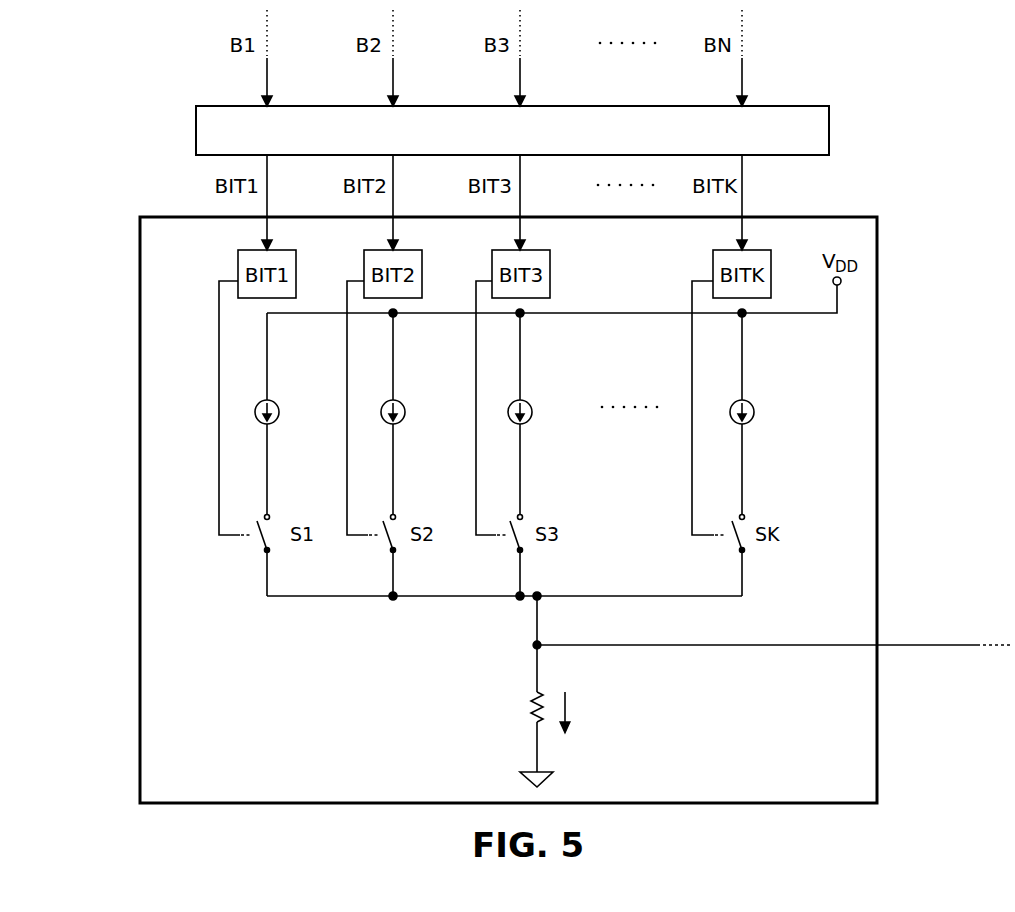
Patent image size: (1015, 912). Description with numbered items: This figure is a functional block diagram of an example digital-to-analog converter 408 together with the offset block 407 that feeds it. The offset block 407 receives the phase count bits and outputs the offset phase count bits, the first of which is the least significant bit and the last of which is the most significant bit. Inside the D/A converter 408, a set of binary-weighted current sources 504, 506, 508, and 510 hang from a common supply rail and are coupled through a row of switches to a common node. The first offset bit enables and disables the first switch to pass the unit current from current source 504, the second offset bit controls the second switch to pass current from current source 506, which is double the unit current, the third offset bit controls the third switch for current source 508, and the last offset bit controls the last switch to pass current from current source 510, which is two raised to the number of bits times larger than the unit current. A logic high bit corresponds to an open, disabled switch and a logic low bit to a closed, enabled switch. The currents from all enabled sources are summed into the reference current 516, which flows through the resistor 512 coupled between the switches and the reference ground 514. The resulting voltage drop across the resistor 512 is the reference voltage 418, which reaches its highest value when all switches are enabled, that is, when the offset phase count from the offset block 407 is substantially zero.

The offset block 407 is at (189, 116).
The digital-to-analog converter 408 is at (158, 212).
The current source 504 is at (278, 373).
The current source 506 is at (404, 373).
The current source 508 is at (540, 370).
The current source 510 is at (768, 367).
The resistor R1 512 is at (487, 707).
The reference ground 514 is at (505, 777).
The reference current IREF 516 is at (635, 705).
The reference voltage VREF 418 is at (935, 603).